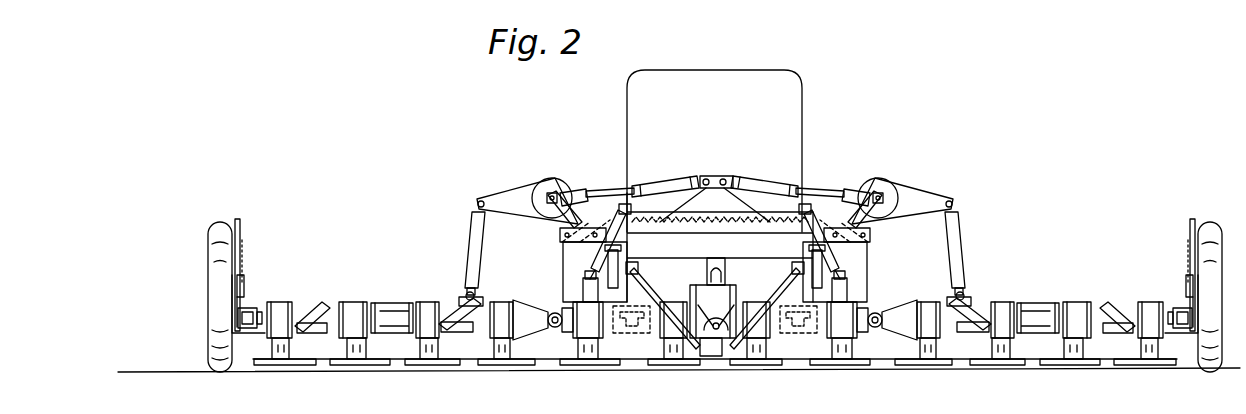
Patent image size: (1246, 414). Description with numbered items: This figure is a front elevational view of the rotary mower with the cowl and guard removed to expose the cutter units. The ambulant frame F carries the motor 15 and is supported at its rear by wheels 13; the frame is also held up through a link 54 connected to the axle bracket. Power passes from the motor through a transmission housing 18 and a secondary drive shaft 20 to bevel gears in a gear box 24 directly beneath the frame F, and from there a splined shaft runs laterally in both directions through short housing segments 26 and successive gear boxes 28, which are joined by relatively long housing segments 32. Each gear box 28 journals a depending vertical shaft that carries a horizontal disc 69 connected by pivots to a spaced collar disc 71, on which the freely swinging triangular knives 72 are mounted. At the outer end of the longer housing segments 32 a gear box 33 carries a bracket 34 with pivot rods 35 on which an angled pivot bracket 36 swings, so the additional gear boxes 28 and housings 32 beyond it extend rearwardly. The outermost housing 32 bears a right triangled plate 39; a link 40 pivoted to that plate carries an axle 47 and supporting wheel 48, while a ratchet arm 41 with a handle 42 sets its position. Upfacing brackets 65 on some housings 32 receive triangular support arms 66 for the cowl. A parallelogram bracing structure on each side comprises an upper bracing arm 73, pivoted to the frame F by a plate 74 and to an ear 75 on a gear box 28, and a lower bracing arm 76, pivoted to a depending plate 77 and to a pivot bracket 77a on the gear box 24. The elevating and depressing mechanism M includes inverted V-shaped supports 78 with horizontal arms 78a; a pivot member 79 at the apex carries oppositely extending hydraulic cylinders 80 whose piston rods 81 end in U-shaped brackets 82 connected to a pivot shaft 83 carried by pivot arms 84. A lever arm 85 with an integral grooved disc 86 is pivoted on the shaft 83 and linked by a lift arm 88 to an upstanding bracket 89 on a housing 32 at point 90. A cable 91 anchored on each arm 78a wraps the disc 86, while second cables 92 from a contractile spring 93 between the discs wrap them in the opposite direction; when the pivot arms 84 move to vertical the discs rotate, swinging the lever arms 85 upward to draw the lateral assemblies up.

The wheels 13 is at (563, 262).
The motor 15 is at (707, 83).
The transmission housing 18 is at (736, 290).
The secondary drive shaft 20 is at (716, 329).
The gear box 24 is at (698, 308).
The housing segment 26 is at (715, 306).
The gear box 28 is at (350, 305).
The housing segments 32 is at (393, 305).
The gear box 33 is at (715, 320).
The bracket 34 is at (566, 333).
The pivot rods 35 is at (554, 312).
The angled pivot bracket 36 is at (527, 302).
The right triangled plate 39 is at (246, 296).
The link 40 is at (238, 318).
The ratchet arm 41 is at (243, 250).
The handle 42 is at (241, 226).
The axle 47 is at (232, 298).
The supporting wheel 48 is at (208, 240).
The link 54 is at (608, 275).
The upfacing bracket 65 is at (322, 334).
The support arms 66 is at (312, 310).
The horizontal disc 69 is at (350, 366).
The collar disc 71 is at (380, 360).
The cutter element or knife 72 is at (400, 371).
The upper bracing arm 73 is at (596, 258).
The plate 74 is at (631, 209).
The ear 75 is at (583, 292).
The lower bracing arm 76 is at (668, 300).
The plate 77 is at (630, 274).
The pivot bracket 77a is at (712, 358).
The inverted V-shaped supports 78 is at (748, 205).
The horizontal arms 78a is at (565, 242).
The pivot member 79 is at (714, 176).
The hydraulic cylinders 80 is at (662, 183).
The piston rod 81 is at (602, 194).
The U-shaped bracket 82 is at (575, 190).
The pivot shaft or pin 83 is at (548, 192).
The pivot arms 84 is at (560, 222).
The lever arm 85 is at (516, 192).
The disc or drum-like structure 86 is at (874, 190).
The lift arm 88 is at (472, 240).
The upstanding bracket 89 is at (466, 293).
The pivot point 90 is at (459, 301).
The cable 91 is at (566, 236).
The second cable 92 is at (600, 222).
The contractile type spring 93 is at (674, 238).
The combined elevating and depressing mechanism M is at (639, 172).
The ambulant frame F is at (720, 247).